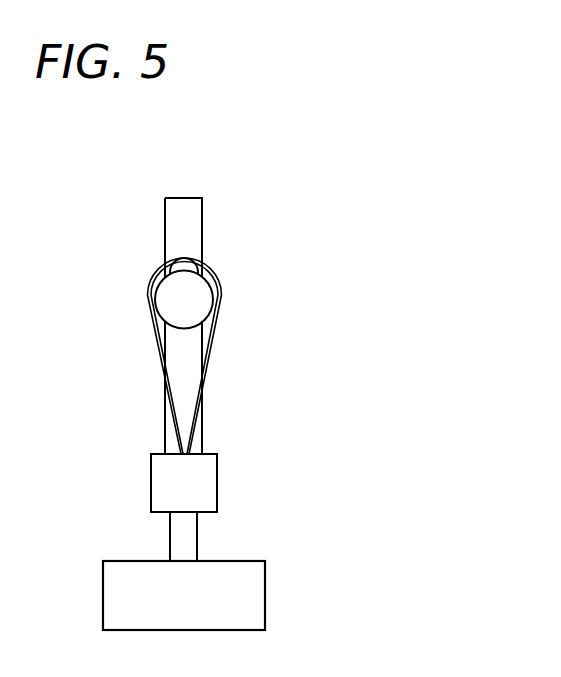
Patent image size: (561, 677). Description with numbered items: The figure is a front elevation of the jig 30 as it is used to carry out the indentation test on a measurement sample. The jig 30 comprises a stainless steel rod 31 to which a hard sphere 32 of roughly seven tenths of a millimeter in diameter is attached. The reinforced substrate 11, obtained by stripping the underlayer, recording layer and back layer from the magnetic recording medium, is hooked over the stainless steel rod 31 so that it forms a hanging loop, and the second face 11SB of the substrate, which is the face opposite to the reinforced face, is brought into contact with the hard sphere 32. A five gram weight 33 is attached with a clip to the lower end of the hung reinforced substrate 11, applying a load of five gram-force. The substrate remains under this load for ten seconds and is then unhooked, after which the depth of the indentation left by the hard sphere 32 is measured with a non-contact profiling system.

The jig 30 is at (222, 110).
The reinforced substrate 11 is at (207, 257).
The hard sphere 32 is at (201, 271).
The stainless steel rod 31 is at (192, 327).
The second face 11SB is at (193, 375).
The 5 g weight 33 is at (218, 484).